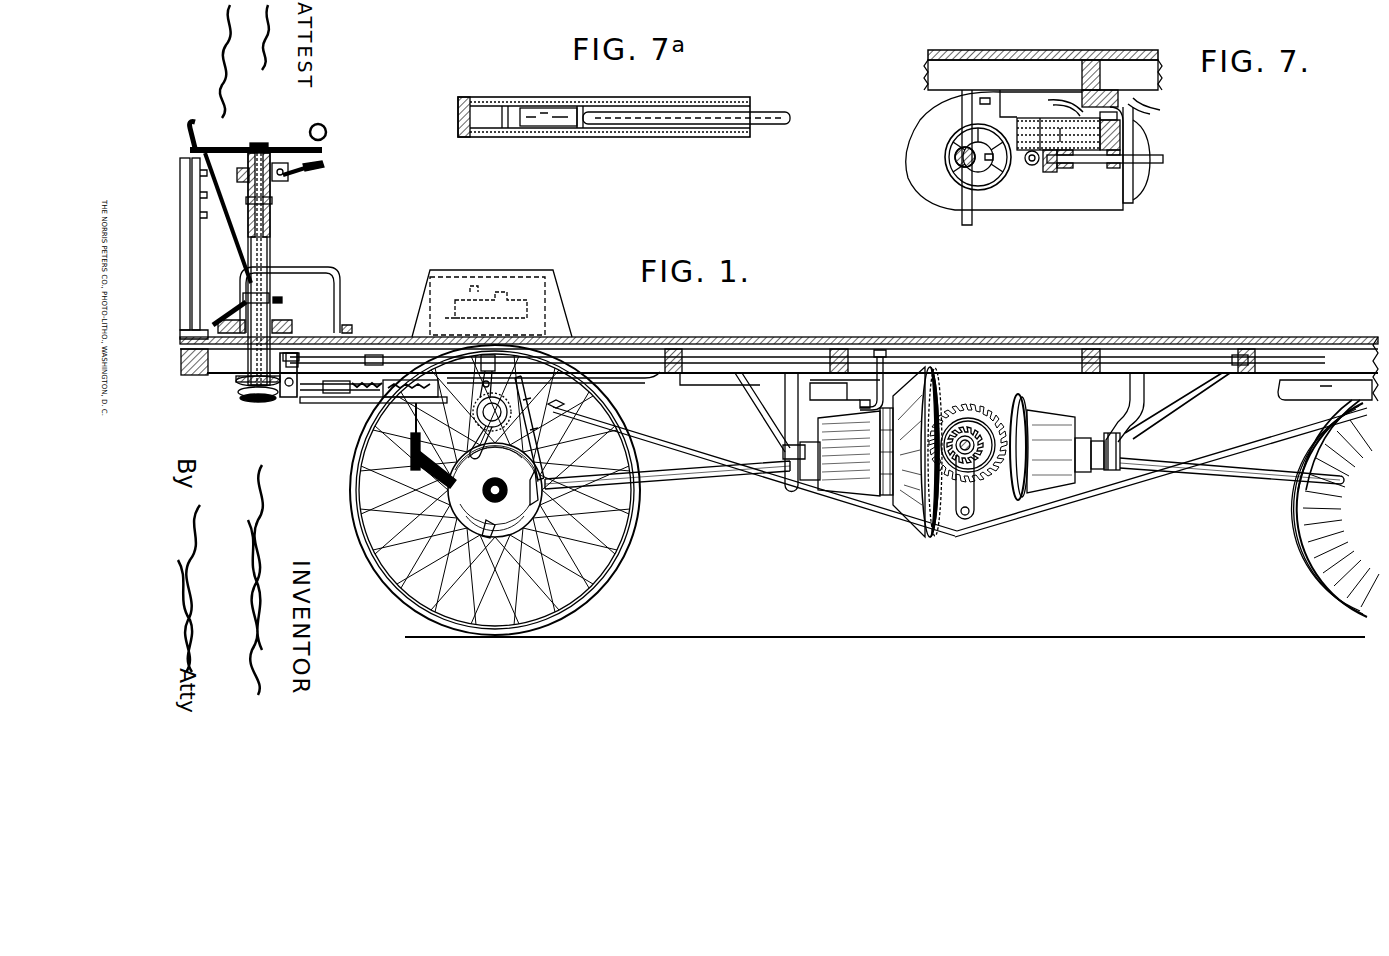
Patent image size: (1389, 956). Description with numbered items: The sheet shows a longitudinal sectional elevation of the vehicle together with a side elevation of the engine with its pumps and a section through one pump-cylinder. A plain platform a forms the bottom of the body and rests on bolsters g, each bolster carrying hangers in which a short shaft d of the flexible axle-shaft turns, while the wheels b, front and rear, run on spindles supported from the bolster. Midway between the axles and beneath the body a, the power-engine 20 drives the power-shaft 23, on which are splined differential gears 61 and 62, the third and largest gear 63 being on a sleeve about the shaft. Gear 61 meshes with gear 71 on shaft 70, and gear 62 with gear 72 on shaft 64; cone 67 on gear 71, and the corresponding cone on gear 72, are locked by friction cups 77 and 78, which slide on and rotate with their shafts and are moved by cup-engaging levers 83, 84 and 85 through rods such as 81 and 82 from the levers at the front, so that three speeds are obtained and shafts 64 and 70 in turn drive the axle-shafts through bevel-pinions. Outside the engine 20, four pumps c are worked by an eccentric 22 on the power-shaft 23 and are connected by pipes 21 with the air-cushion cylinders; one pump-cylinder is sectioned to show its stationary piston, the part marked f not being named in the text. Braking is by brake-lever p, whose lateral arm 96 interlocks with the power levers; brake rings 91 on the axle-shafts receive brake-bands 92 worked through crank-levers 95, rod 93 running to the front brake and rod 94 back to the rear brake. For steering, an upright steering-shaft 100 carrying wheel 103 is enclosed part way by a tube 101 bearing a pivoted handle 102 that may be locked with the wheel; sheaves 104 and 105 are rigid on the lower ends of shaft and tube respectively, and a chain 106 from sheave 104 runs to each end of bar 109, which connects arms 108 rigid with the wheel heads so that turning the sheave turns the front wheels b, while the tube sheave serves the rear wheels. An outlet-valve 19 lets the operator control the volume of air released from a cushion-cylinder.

In FIG. 1, the outlet-valve 19 is at (203, 248).
In FIG. 1, the brake-lever p is at (236, 255).
In FIG. 1, the steering wheel 103 is at (258, 136).
In FIG. 1, the pivoted handle 102 is at (324, 166).
In FIG. 1, the lateral arm 96 is at (272, 201).
In FIG. 1, the steering-shaft 100 is at (270, 225).
In FIG. 1, the tube 101 is at (268, 248).
In FIG. 1, the sheave 105 is at (236, 380).
In FIG. 1, the sheave 104 is at (240, 396).
In FIG. 1, the chain 106 is at (286, 397).
In FIG. 1, the rod 81 is at (330, 392).
In FIG. 1, the bar 109 is at (372, 403).
In FIG. 1, the arms 108 is at (411, 450).
In FIG. 1, the rod 93 is at (388, 357).
In FIG. 1, the rod 94 is at (1305, 357).
In FIG. 1, the crank-levers 95 is at (488, 355).
In FIG. 1, the bolster g is at (476, 418).
In FIG. 1, the brake rings 91 is at (495, 490).
In FIG. 1, the brake-bands 92 is at (510, 504).
In FIG. 1, the short shaft d is at (504, 483).
In FIG. 1, the wheels b is at (632, 515).
In FIG. 1, the shaft 70 is at (690, 470).
In FIG. 1, the rod 82 is at (700, 374).
In FIG. 1, the cup-engaging lever 83 is at (760, 402).
In FIG. 1, the cup-engaging lever 84 is at (882, 350).
In FIG. 1, the cup-engaging lever 85 is at (1168, 421).
In FIG. 1, the friction-engaging cup 77 is at (840, 495).
In FIG. 1, the cone 67 is at (898, 498).
In FIG. 1, the gear 71 is at (932, 531).
In FIG. 1, the power-shaft 23 is at (958, 440).
In FIG. 7, the power-shaft 23 is at (955, 158).
In FIG. 1, the gear 63 is at (990, 412).
In FIG. 1, the gear 61 is at (980, 478).
In FIG. 1, the gear 72 is at (1022, 405).
In FIG. 1, the gear 62 is at (1012, 430).
In FIG. 1, the friction-engaging cup 78 is at (1086, 438).
In FIG. 1, the shaft 64 is at (1180, 454).
In FIG. 7a, the pumps c is at (716, 99).
In FIG. 7, the pumps c is at (1035, 119).
In FIG. 7a, the piston rod f is at (772, 125).
In FIG. 7, the platform a is at (1043, 67).
In FIG. 7, the power-engine 20 is at (1066, 205).
In FIG. 7, the pipes 21 is at (1140, 114).
In FIG. 7, the eccentric 22 is at (958, 146).